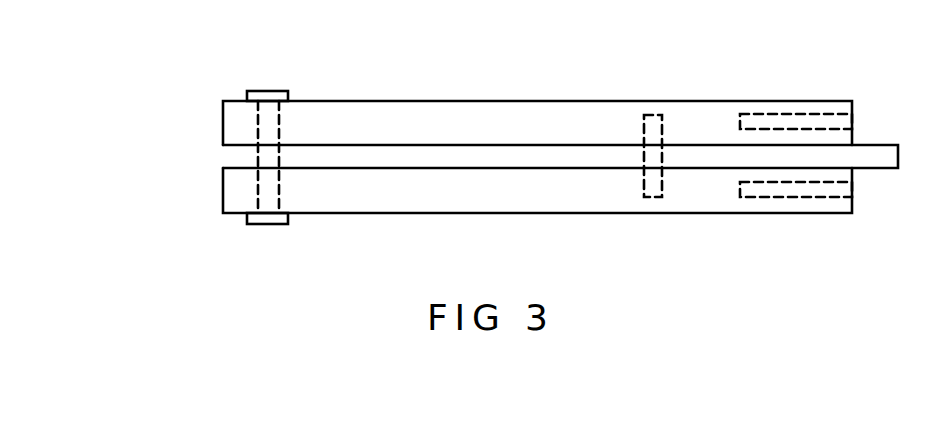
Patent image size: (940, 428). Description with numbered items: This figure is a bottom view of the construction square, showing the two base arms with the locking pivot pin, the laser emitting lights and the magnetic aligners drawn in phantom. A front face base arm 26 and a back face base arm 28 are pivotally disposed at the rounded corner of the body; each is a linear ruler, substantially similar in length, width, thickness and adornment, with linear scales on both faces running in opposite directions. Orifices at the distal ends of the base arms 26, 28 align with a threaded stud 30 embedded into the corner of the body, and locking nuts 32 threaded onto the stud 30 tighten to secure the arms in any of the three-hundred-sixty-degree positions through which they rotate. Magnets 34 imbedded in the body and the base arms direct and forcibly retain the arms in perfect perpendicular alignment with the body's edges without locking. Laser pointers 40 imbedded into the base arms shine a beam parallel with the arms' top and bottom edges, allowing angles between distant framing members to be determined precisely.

The front face base arm 26 is at (363, 118).
The back face base arm 28 is at (368, 213).
The threaded stud 30 is at (264, 128).
The locking nuts 32 is at (265, 228).
The magnets 34 is at (653, 197).
The laser pointers 40 is at (796, 125).